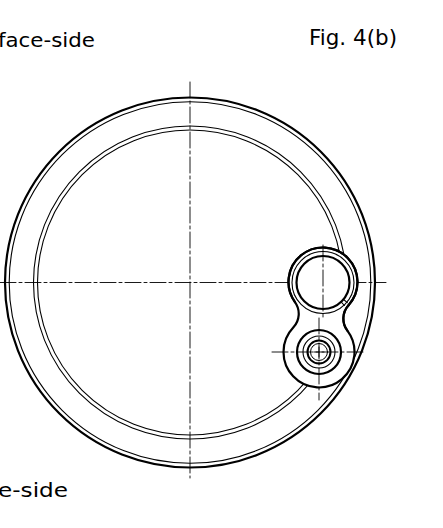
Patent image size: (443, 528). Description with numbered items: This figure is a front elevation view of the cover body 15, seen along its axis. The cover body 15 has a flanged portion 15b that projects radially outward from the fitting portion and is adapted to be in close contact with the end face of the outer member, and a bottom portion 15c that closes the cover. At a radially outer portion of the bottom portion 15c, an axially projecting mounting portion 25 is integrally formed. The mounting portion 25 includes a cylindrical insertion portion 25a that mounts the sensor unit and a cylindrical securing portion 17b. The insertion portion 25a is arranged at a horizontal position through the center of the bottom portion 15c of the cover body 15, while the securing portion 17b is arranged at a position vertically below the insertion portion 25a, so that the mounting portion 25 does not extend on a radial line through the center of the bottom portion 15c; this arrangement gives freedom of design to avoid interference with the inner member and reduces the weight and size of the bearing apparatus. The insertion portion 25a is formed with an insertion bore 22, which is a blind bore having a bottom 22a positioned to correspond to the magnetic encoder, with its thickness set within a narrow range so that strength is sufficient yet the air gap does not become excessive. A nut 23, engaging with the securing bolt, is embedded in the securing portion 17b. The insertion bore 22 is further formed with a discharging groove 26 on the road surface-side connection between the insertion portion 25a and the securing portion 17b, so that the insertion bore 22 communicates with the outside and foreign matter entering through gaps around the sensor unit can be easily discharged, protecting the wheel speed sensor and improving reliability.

The cover body 15 is at (291, 123).
The flanged portion 15b is at (83, 143).
The bottom portion 15c is at (147, 404).
The cylindrical securing portion 17b is at (292, 341).
The insertion bore 22 is at (312, 297).
The bottom 22a is at (315, 273).
The nut 23 is at (298, 354).
The mounting portion 25 is at (348, 258).
The cylindrical insertion portion 25a is at (290, 272).
The discharging groove 26 is at (344, 313).